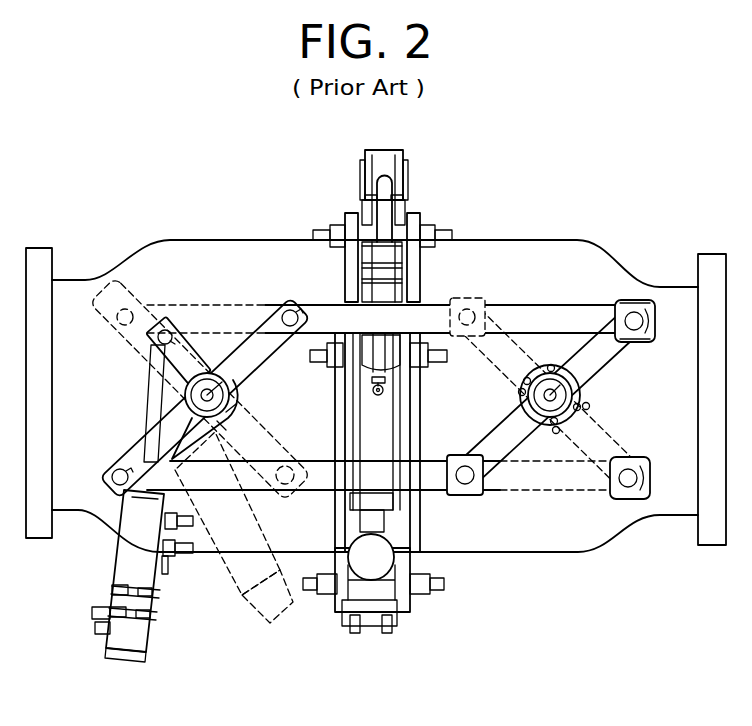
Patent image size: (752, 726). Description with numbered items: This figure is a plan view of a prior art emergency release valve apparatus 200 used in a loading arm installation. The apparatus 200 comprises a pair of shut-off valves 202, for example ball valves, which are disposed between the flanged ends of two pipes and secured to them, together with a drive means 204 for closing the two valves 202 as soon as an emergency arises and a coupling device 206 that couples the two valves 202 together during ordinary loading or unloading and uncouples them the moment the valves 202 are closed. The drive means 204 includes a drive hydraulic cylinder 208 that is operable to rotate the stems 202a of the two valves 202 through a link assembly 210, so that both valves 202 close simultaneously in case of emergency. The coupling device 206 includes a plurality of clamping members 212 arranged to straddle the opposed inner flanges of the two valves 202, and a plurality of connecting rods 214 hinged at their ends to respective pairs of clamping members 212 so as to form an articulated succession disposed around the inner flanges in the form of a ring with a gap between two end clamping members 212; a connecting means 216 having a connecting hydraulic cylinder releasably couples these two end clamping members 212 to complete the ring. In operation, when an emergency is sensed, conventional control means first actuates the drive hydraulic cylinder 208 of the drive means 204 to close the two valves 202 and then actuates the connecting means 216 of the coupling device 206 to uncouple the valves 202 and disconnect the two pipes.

The emergency release valve apparatus 200 is at (376, 425).
The shut-off valve 202 is at (376, 372).
The stem 202a is at (366, 450).
The drive means 204 is at (176, 599).
The coupling device 206 is at (373, 621).
The drive hydraulic cylinder 208 is at (123, 503).
The link assembly 210 is at (401, 385).
The clamping member 212 is at (374, 226).
The connecting rod 214 is at (423, 206).
The connecting means 216 is at (366, 442).